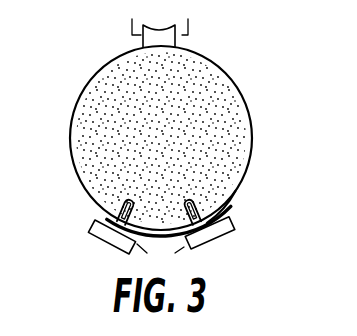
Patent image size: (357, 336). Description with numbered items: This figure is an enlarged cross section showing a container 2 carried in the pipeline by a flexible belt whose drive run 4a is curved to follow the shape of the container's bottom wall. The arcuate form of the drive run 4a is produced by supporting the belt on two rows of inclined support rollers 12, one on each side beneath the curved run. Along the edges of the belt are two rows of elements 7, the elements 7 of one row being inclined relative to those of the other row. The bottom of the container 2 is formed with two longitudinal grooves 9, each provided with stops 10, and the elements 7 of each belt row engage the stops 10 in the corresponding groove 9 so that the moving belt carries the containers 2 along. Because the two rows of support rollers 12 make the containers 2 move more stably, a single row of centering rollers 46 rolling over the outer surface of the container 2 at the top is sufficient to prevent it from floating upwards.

The container 2 is at (84, 86).
The centering roller 46 is at (164, 40).
The drive run 4a is at (230, 207).
The longitudinal groove 9 is at (123, 201).
The stop 10 is at (177, 204).
The element 7 is at (217, 200).
The support roller 12 is at (93, 229).